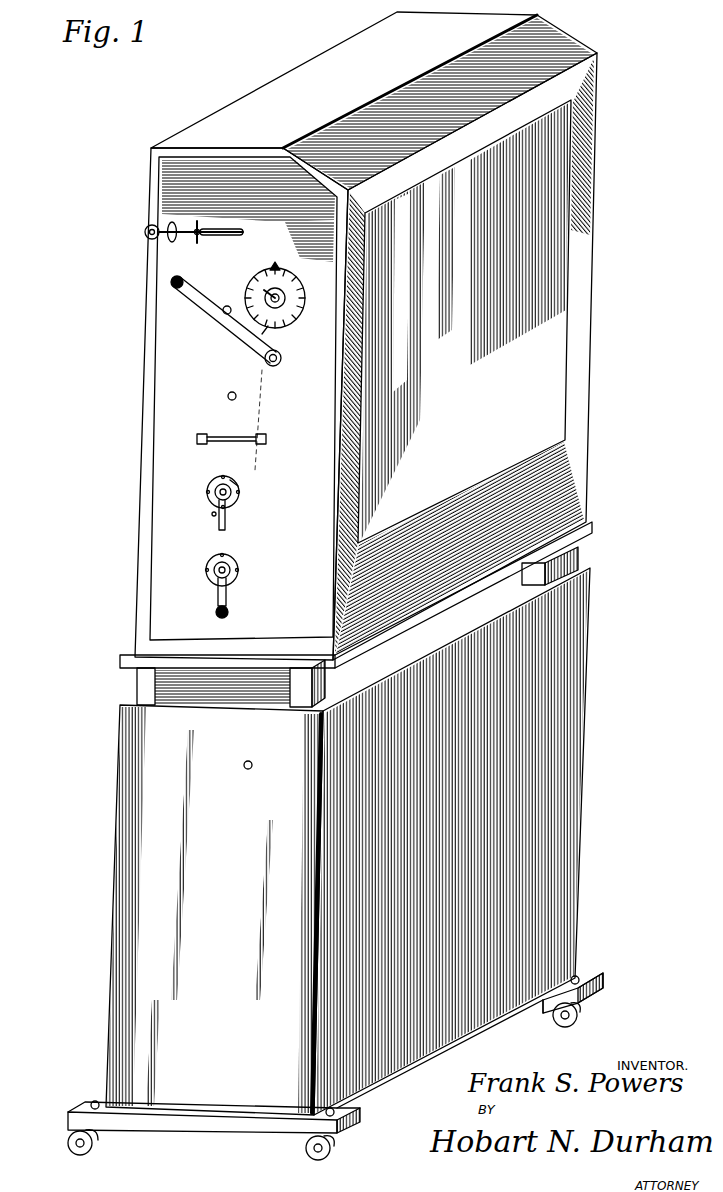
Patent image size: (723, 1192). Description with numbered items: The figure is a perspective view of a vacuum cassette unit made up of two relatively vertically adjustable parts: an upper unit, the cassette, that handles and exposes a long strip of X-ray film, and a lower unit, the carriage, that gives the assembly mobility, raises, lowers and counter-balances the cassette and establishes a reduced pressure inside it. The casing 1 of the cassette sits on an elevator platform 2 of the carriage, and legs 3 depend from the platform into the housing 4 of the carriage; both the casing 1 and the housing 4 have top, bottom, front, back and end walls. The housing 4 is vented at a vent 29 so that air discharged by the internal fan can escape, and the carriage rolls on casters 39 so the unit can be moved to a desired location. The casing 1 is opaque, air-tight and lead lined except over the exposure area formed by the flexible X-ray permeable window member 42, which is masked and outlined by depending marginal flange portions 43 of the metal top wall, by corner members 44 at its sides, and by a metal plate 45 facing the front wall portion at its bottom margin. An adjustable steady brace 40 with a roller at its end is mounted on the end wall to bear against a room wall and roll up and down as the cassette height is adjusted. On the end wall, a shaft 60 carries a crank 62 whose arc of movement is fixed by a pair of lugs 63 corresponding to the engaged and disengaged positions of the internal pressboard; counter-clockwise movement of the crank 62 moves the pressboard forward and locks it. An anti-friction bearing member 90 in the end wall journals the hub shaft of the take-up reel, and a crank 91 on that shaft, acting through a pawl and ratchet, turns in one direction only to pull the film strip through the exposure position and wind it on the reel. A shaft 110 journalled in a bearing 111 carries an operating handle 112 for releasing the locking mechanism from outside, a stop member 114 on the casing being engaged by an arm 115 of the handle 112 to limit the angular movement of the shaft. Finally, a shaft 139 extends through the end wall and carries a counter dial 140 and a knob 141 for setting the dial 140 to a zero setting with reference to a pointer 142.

The casing 1 is at (162, 456).
The elevator platform 2 is at (122, 660).
The legs 3 is at (135, 686).
The housing 4 is at (305, 875).
The vent 29 is at (246, 770).
The casters 39 is at (68, 1143).
The adjustable steady brace 40 is at (180, 242).
The X-ray permeable window member 42 is at (540, 320).
The depending marginal flange portions 43 is at (151, 150).
The corner members 44 is at (585, 256).
The metal plate 45 is at (565, 483).
The shaft 60 is at (275, 367).
The crank 62 is at (210, 313).
The lugs 63 is at (228, 305).
The anti-friction bearing member 90 is at (238, 563).
The crank 91 is at (218, 602).
The shaft 110 is at (240, 492).
The bearing 111 is at (222, 484).
The operating handle 112 is at (238, 486).
The stop member 114 is at (213, 515).
The arm 115 is at (226, 531).
The shaft 139 is at (286, 288).
The counter dial 140 is at (283, 330).
The knob 141 is at (264, 290).
The pointer 142 is at (276, 262).